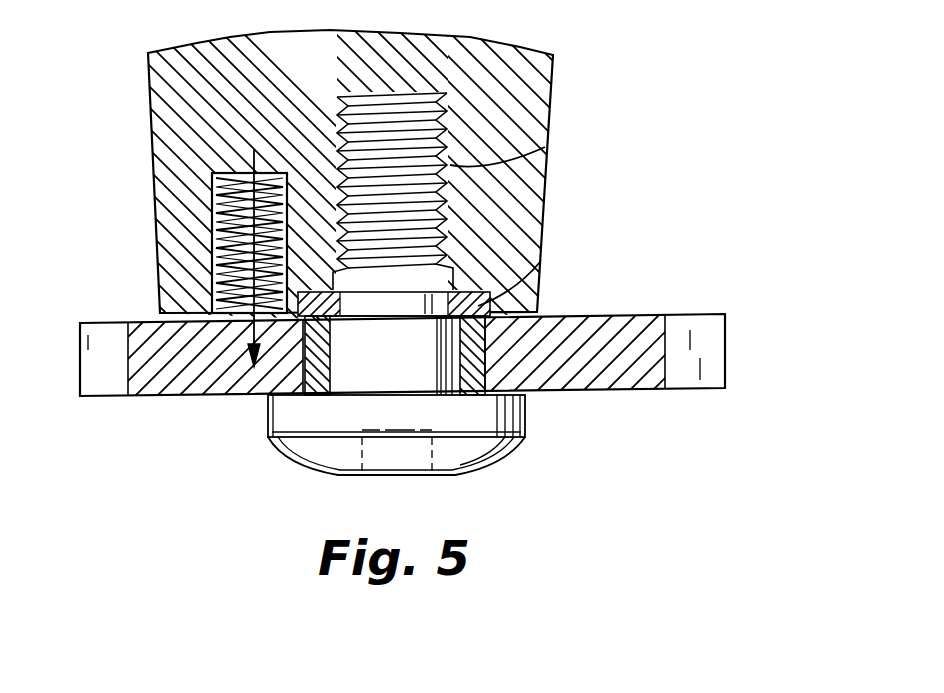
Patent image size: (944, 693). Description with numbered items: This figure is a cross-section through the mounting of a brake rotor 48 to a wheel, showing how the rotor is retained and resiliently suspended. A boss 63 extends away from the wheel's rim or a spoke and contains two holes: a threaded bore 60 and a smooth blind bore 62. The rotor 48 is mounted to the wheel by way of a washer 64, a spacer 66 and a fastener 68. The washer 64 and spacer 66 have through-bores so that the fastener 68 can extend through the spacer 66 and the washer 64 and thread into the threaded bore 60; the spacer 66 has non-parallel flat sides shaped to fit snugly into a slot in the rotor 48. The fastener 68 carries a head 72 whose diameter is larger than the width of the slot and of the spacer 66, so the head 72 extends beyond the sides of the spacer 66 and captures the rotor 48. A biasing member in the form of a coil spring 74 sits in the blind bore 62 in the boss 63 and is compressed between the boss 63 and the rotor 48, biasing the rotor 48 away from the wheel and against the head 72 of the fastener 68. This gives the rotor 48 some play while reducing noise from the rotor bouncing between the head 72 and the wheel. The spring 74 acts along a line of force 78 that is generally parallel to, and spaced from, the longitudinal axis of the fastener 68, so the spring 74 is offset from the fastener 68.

The boss 63 is at (540, 70).
The threaded bore 60 is at (450, 158).
The smooth blind bore 62 is at (212, 195).
The coil spring 74 is at (212, 228).
The line of force 78 is at (254, 156).
The washer 64 is at (470, 302).
The rotor 48 is at (650, 330).
The spacer 66 is at (483, 376).
The fastener 68 is at (445, 352).
The head 72 is at (482, 410).